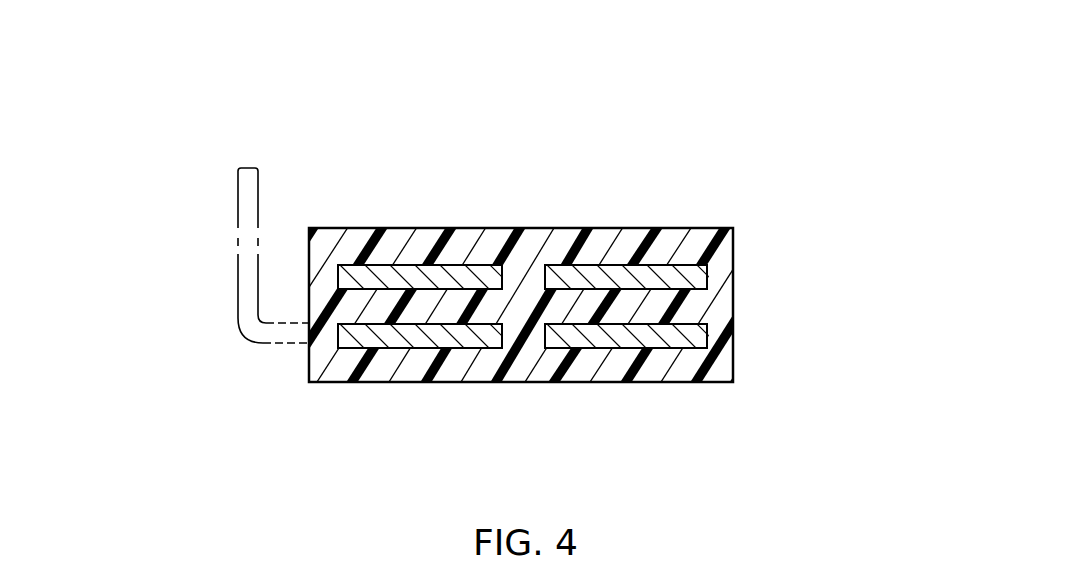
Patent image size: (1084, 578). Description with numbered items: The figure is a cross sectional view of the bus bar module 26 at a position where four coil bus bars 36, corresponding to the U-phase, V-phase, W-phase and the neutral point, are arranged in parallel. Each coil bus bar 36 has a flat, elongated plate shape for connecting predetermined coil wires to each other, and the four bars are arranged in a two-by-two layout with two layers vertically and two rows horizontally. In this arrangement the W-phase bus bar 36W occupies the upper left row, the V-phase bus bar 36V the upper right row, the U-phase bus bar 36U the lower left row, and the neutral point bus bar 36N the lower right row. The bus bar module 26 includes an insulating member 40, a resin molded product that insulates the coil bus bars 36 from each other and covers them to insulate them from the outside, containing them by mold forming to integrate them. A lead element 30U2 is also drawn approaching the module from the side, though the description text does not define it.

The bus bar module 26 is at (535, 267).
The insulating member 40 is at (532, 250).
The coil bus bar 36 is at (594, 305).
The W-phase bus bar 36W is at (405, 265).
The U-phase bus bar 36U is at (400, 340).
The V-phase bus bar 36V is at (688, 265).
The neutral point bus bar 36N is at (658, 338).
The coil lead wire 30U2 is at (237, 198).